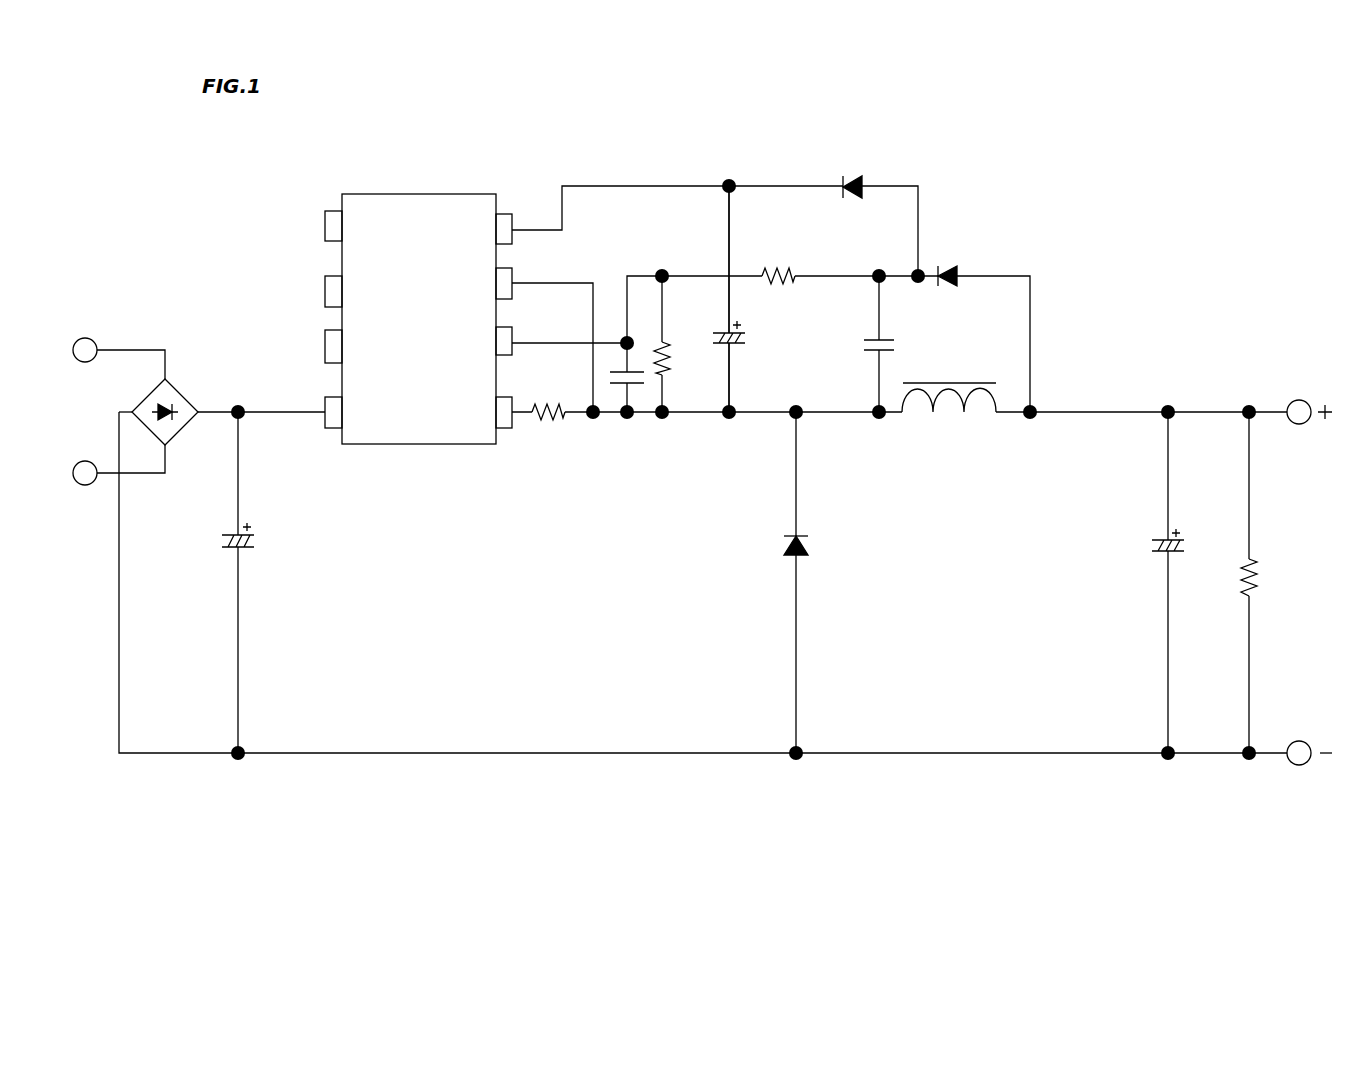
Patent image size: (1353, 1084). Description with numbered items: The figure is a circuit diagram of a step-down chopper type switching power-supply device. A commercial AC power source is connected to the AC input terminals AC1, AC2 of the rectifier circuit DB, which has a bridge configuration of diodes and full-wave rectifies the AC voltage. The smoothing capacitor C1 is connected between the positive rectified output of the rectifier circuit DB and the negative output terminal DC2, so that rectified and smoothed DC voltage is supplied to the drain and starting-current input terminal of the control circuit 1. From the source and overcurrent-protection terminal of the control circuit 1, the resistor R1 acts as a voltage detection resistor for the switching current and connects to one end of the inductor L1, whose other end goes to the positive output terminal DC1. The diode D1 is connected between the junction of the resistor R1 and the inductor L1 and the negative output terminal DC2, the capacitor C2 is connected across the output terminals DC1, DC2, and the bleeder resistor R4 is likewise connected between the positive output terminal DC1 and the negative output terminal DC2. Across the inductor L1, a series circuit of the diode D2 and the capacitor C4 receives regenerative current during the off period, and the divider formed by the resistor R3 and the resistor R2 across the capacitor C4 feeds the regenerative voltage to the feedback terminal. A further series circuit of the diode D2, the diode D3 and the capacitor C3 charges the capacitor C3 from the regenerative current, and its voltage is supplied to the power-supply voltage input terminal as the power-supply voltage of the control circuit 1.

The control circuit 1 is at (418, 298).
The AC input terminal AC1 is at (111, 333).
The AC input terminal AC2 is at (111, 447).
The rectifier circuit DB is at (174, 397).
The smoothing capacitor C1 is at (229, 582).
The resistor R1 is at (556, 408).
The resistor R2 is at (690, 340).
The capacitor C3 is at (740, 346).
The resistor R3 is at (786, 278).
The capacitor C4 is at (872, 338).
The diode D3 is at (853, 178).
The diode D2 is at (948, 270).
The inductor L1 is at (952, 404).
The diode D1 is at (808, 545).
The capacitor C2 is at (1152, 538).
The bleeder resistor R4 is at (1258, 565).
The positive output terminal DC1 is at (1303, 382).
The negative output terminal DC2 is at (1303, 724).